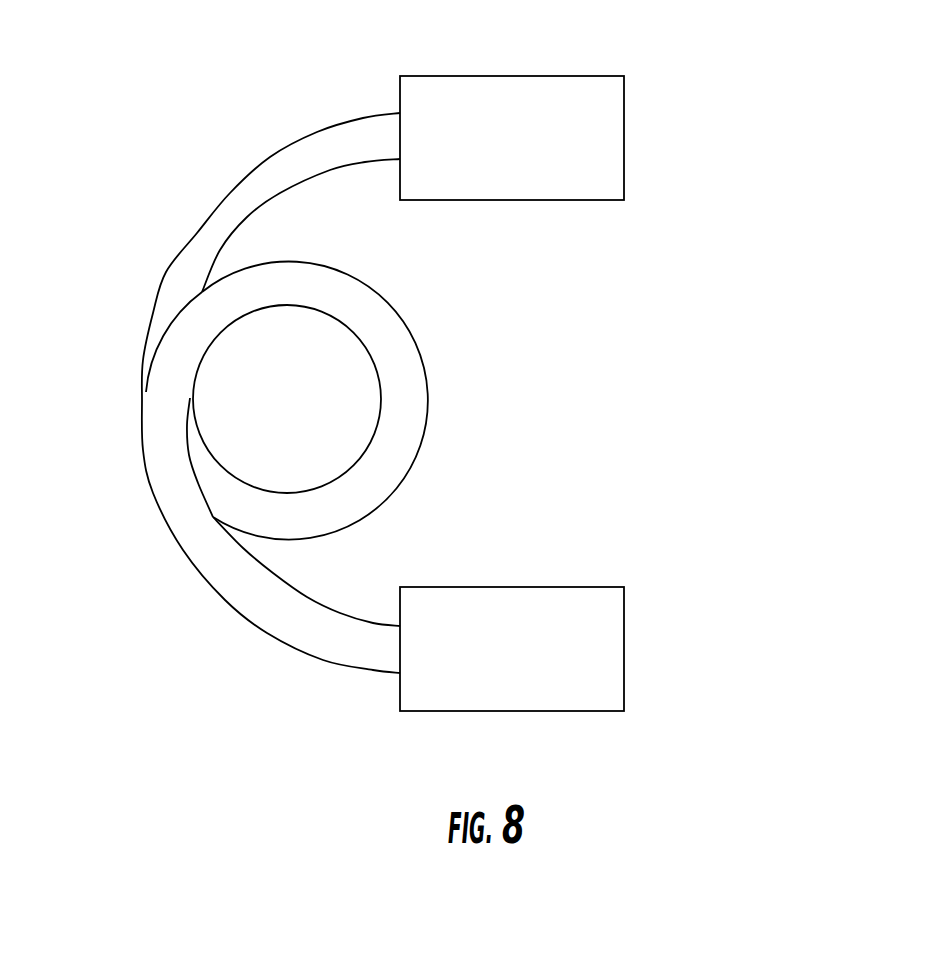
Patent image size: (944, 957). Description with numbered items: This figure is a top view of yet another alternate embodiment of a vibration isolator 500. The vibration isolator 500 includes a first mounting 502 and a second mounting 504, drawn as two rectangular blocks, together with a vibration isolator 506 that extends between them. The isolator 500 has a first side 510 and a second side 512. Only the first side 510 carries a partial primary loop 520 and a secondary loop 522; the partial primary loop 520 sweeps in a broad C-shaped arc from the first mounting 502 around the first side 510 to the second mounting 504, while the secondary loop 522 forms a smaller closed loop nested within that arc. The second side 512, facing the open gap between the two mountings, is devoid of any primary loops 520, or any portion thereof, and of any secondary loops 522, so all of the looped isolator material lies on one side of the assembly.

The vibration isolator 500 is at (760, 138).
The first mounting 502 is at (485, 93).
The second mounting 504 is at (600, 630).
The vibration isolator 506 is at (180, 472).
The first side 510 is at (108, 363).
The second side 512 is at (650, 368).
The partial primary loop 520 is at (307, 625).
The secondary loop 522 is at (403, 375).